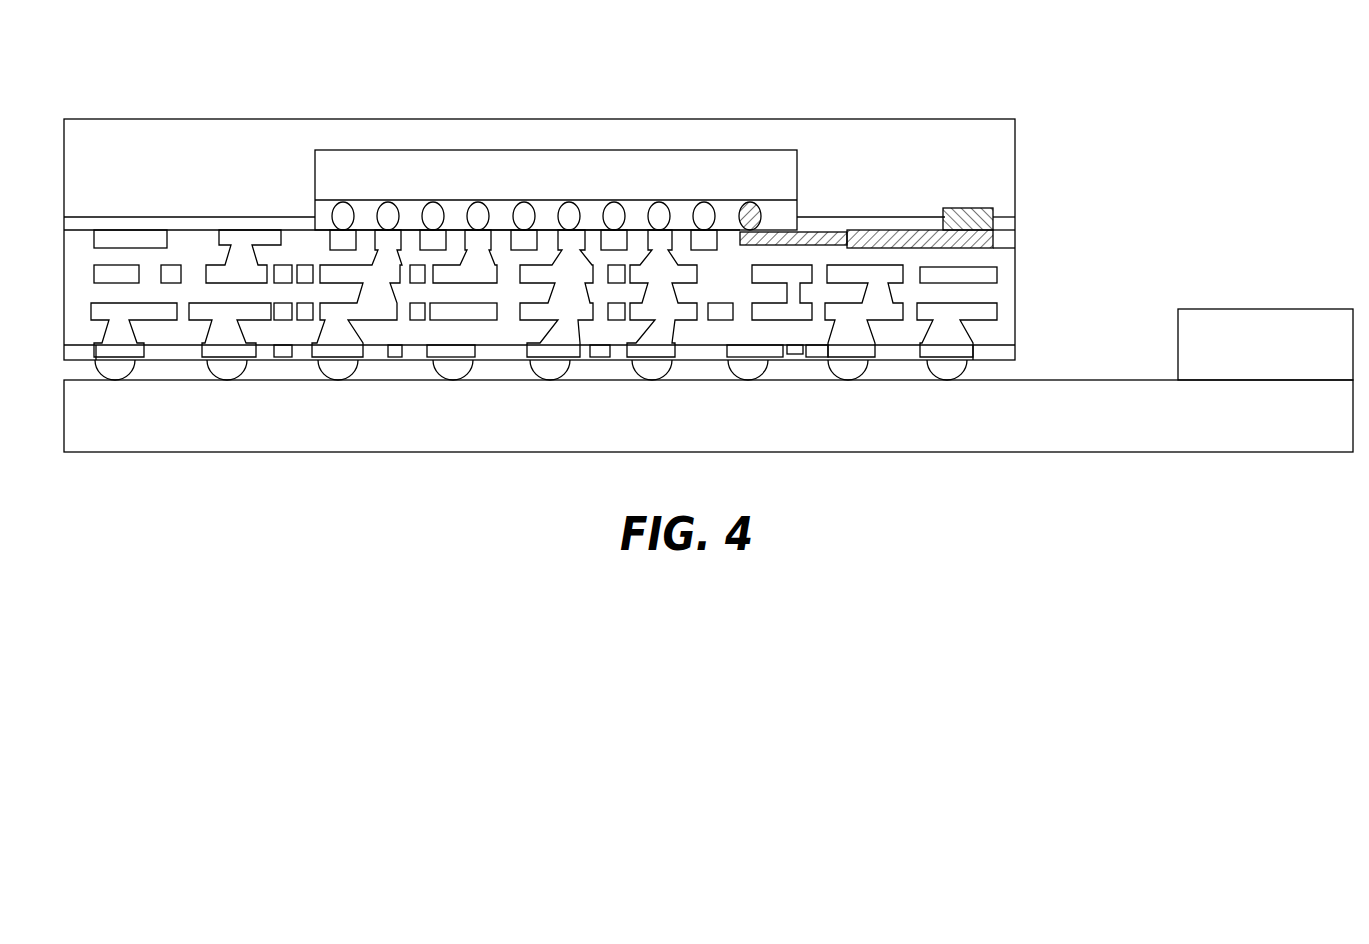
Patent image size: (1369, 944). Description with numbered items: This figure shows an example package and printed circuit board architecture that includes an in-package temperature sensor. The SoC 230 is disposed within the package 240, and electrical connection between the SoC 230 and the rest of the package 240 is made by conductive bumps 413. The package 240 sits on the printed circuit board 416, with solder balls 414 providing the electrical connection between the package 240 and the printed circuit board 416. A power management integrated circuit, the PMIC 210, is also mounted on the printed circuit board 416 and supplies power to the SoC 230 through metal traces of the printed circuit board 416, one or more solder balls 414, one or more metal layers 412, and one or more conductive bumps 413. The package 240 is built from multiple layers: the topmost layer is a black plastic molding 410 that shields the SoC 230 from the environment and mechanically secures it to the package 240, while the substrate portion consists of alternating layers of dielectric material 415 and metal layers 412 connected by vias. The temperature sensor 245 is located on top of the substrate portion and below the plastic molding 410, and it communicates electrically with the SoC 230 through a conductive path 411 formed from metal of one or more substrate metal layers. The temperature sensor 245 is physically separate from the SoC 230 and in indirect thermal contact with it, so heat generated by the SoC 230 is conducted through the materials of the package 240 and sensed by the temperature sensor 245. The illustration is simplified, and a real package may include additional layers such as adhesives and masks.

The package 240 is at (128, 119).
The black plastic molding 410 is at (1015, 133).
The SoC 230 is at (556, 190).
The conductive bumps 413 is at (341, 202).
The temperature sensor 245 is at (1015, 212).
The conductive path 411 is at (1015, 247).
The metal layers 412 is at (1015, 276).
The dielectric material 415 is at (1015, 324).
The solder balls 414 is at (955, 381).
The printed circuit board 416 is at (708, 416).
The PMIC 210 is at (1265, 344).